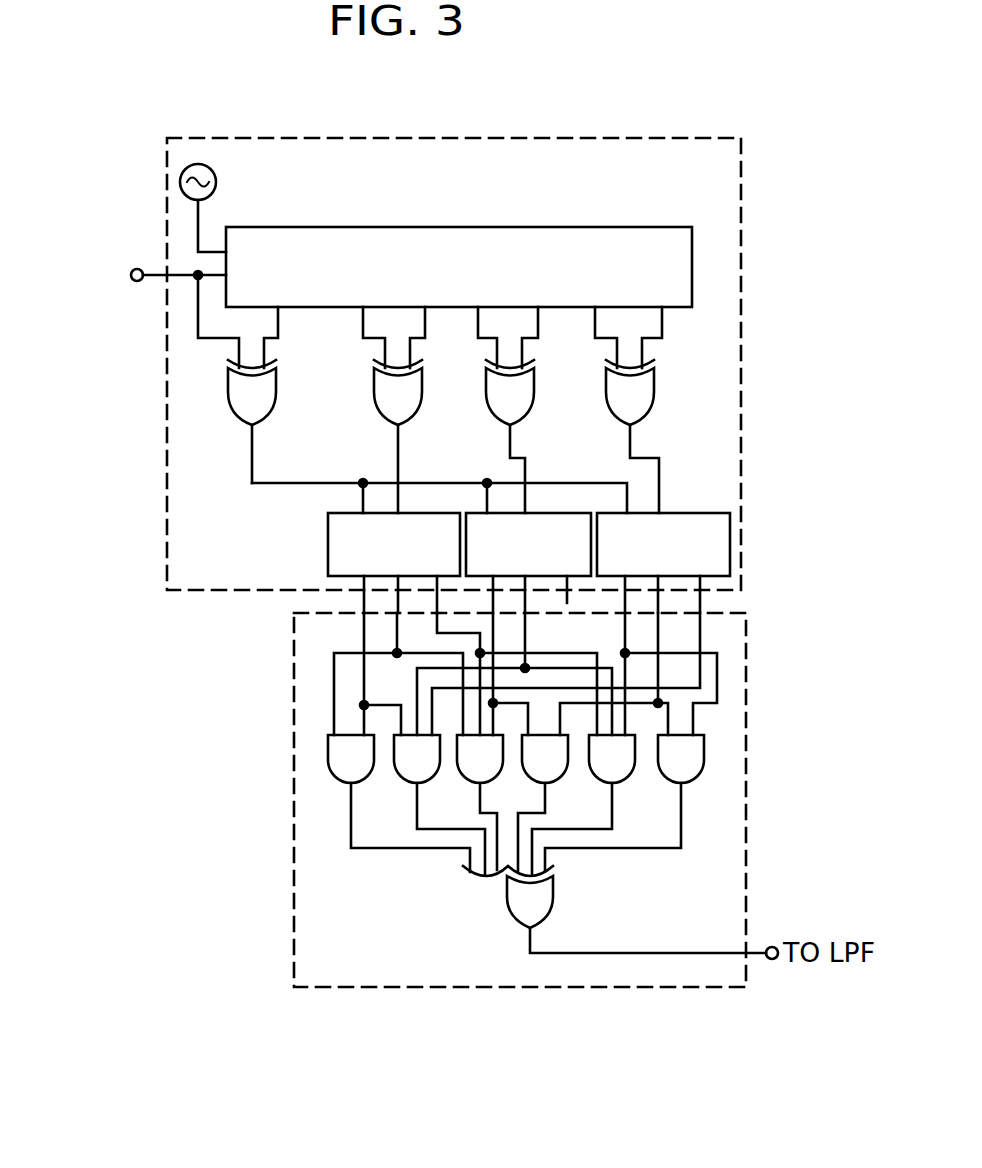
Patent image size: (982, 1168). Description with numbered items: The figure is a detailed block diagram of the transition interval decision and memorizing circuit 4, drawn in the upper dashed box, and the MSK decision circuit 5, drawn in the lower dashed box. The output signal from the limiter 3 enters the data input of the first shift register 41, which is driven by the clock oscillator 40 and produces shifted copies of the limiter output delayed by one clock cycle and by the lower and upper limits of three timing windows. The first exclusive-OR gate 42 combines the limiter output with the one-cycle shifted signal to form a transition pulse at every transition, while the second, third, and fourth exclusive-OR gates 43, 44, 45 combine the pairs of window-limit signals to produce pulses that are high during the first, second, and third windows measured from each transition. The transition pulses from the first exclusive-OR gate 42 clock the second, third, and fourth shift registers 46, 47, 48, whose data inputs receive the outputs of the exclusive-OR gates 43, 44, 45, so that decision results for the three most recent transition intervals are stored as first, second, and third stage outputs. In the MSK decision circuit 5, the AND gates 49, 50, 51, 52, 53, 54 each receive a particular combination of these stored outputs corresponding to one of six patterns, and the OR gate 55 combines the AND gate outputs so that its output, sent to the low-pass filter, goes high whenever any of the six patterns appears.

The limiter 3 is at (130, 297).
The transition interval decision and memorizing circuit 4 is at (716, 137).
The MSK decision circuit 5 is at (747, 613).
The clock oscillator 40 is at (217, 182).
The first shift register 41 is at (666, 227).
The first exclusive-OR gate 42 is at (266, 413).
The second exclusive-OR gate 43 is at (412, 413).
The third exclusive-OR gate 44 is at (524, 413).
The fourth exclusive-OR gate 45 is at (644, 413).
The second shift register 46 is at (327, 565).
The third shift register 47 is at (569, 513).
The fourth shift register 48 is at (714, 513).
The AND gate 49 is at (363, 783).
The AND gate 50 is at (429, 783).
The AND gate 51 is at (492, 783).
The AND gate 52 is at (557, 783).
The AND gate 53 is at (624, 783).
The AND gate 54 is at (693, 783).
The OR gate 55 is at (553, 906).